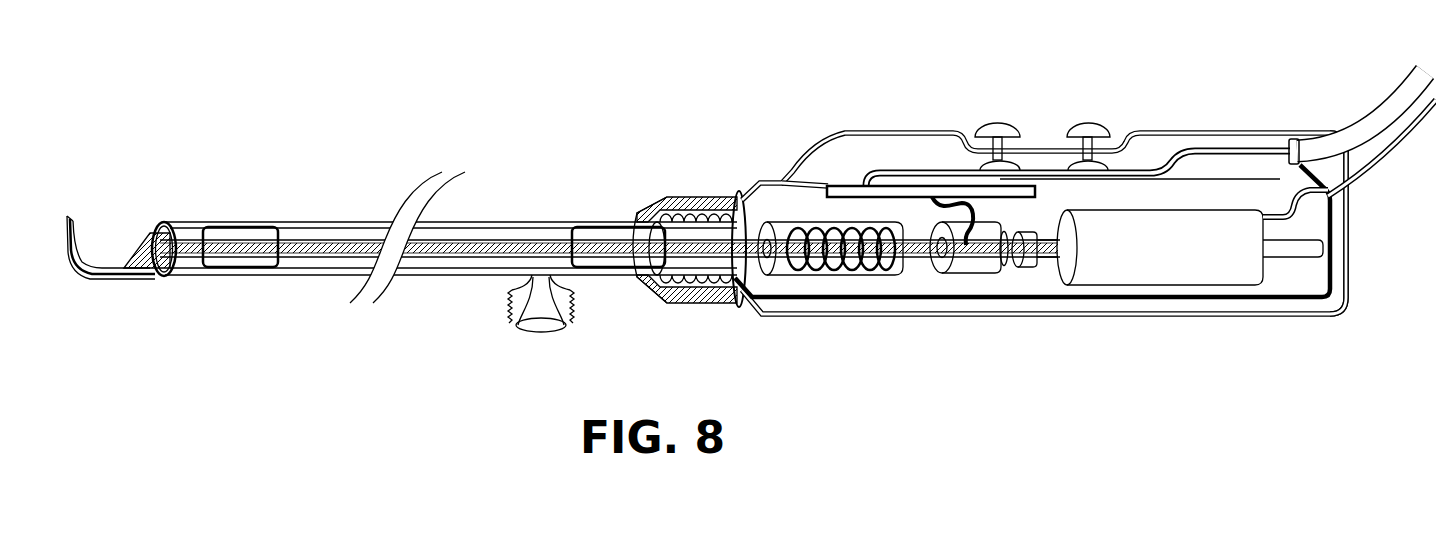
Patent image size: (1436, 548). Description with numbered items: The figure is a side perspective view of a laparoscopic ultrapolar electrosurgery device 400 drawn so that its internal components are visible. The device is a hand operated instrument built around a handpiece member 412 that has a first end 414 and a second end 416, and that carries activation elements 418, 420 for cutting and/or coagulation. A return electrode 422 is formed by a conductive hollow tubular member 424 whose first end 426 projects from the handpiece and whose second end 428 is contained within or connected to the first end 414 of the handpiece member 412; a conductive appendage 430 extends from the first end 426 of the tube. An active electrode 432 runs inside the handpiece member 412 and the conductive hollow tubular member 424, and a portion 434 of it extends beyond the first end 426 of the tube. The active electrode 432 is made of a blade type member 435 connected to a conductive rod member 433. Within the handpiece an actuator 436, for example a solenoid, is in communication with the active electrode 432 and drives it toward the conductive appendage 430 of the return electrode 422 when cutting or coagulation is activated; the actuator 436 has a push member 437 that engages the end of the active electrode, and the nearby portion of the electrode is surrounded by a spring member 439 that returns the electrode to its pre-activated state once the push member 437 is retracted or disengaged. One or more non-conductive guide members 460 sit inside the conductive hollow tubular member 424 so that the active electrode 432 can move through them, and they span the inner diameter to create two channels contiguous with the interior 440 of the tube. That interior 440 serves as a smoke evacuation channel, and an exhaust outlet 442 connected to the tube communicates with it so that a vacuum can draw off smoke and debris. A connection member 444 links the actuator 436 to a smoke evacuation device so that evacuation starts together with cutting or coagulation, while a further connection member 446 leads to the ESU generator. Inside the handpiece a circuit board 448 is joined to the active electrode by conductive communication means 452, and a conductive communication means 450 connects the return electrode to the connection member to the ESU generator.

The laparoscopic ultrapolar electrosurgery device 400 is at (716, 93).
The handpiece member 412 is at (945, 318).
The first end 414 is at (680, 306).
The second end 416 is at (1350, 270).
The activation element 418 is at (992, 122).
The activation element 420 is at (1088, 124).
The return electrode 422 is at (315, 280).
The conductive hollow tubular member 424 is at (318, 222).
The first end 426 is at (163, 278).
The second end 428 is at (781, 276).
The conductive appendage 430 is at (78, 227).
The active electrode 432 is at (609, 205).
The conductive rod member 433 is at (482, 252).
The portion of the active electrode 434 is at (169, 202).
The blade type member 435 is at (137, 247).
The actuator 436 is at (1180, 272).
The push member 437 is at (1036, 268).
The spring member 439 is at (855, 277).
The interior 440 is at (453, 265).
The exhaust outlet 442 is at (568, 303).
The connection member 444 is at (1382, 163).
The connection member 446 is at (1380, 115).
The circuit board 448 is at (836, 184).
The conductive communication means 450 is at (815, 300).
The conductive communication means 452 is at (990, 273).
The non-conductive guide member 460 is at (233, 228).